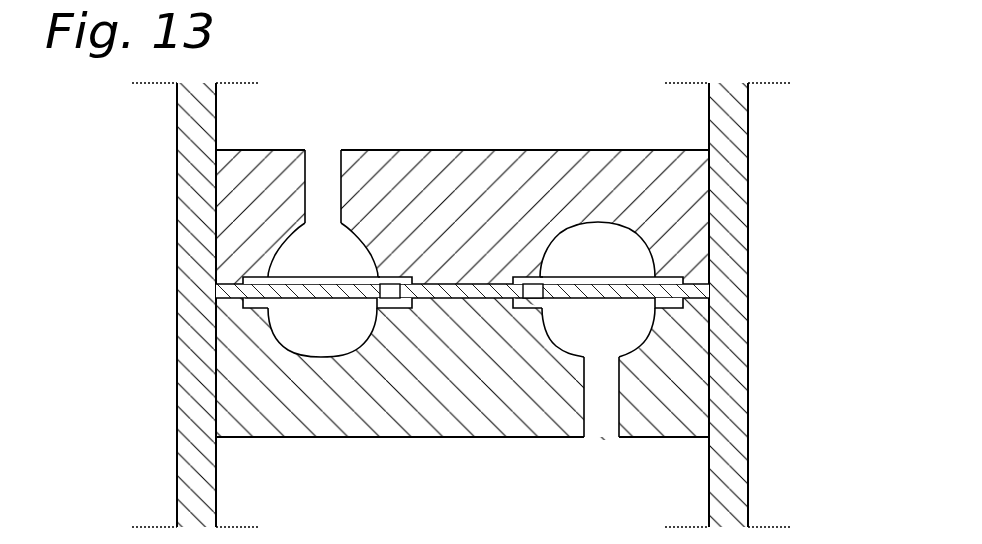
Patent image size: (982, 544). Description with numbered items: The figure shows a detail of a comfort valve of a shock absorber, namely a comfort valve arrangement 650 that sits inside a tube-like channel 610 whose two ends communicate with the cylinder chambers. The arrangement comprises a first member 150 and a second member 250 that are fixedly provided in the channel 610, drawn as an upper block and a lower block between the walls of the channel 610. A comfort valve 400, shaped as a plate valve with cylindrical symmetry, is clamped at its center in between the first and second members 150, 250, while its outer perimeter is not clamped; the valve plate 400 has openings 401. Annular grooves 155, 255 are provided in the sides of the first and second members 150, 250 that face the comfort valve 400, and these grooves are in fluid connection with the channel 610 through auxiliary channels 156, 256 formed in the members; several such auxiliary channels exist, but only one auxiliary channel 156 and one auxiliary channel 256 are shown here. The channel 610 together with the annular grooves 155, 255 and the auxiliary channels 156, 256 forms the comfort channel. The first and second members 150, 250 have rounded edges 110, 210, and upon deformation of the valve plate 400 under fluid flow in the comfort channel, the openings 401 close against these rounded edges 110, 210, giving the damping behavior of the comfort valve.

The tube-like channel 610 is at (288, 127).
The comfort valve arrangement 650 is at (566, 137).
The first member 150 is at (460, 193).
The second member 250 is at (456, 405).
The rounded edge 110 is at (380, 275).
The auxiliary channel 156 is at (321, 195).
The auxiliary channel 256 is at (603, 405).
The annular groove 155 is at (328, 259).
The annular groove 255 is at (321, 325).
The comfort valve 400 is at (637, 287).
The openings 401 is at (400, 310).
The rounded edge 210 is at (393, 292).